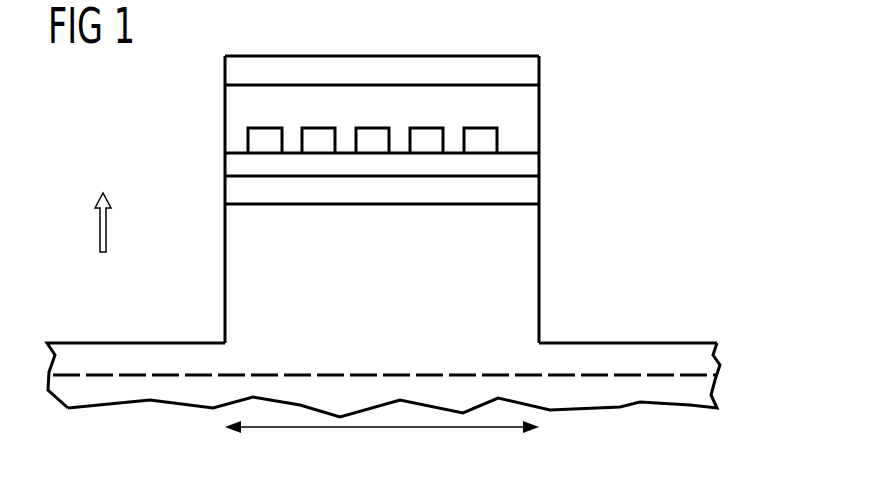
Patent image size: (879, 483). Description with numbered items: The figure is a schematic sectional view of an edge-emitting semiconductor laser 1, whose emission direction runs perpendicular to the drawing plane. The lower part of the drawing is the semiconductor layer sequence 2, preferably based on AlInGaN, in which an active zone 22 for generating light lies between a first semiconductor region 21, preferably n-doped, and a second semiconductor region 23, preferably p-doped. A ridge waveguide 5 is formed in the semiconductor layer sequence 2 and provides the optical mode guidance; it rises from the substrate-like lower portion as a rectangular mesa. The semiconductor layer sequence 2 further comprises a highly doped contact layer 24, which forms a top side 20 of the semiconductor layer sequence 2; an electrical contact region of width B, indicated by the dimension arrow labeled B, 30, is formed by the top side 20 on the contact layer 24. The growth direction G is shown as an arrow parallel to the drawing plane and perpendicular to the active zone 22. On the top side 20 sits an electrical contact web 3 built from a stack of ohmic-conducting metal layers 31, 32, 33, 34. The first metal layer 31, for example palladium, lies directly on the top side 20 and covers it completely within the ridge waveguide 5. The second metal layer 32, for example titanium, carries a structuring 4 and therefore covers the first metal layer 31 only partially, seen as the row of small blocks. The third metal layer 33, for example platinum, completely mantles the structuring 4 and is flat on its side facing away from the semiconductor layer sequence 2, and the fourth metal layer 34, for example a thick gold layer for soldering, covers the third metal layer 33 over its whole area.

The semiconductor laser 1 is at (628, 108).
The semiconductor layer sequence 2 is at (776, 175).
The electrical contact web 3 is at (138, 57).
The structuring 4 is at (339, 139).
The ridge waveguide 5 is at (541, 273).
The top side 20 is at (443, 178).
The first semiconductor region 21 is at (712, 393).
The active zone 22 is at (708, 375).
The second semiconductor region 23 is at (703, 358).
The contact layer 24 is at (528, 193).
The width of chip 30 is at (387, 428).
The first metal layer 31 is at (237, 165).
The second metal layer 32 is at (260, 138).
The third metal layer 33 is at (237, 108).
The fourth metal layer 34 is at (237, 72).
The width B is at (382, 452).
The growth direction G is at (98, 228).